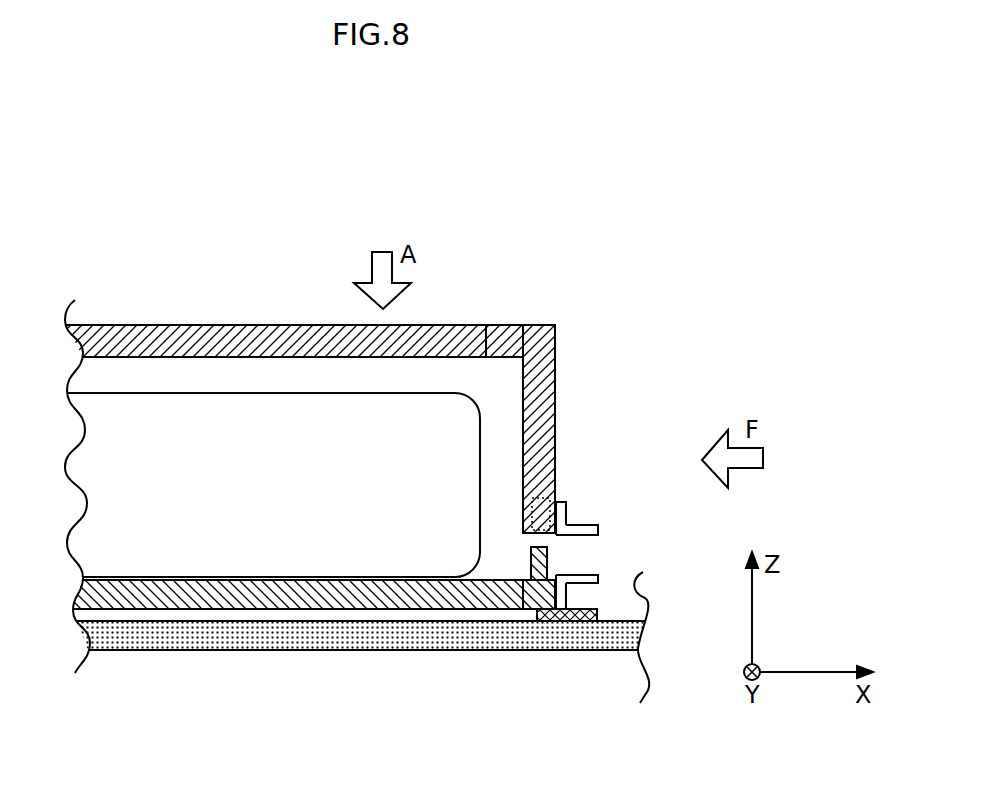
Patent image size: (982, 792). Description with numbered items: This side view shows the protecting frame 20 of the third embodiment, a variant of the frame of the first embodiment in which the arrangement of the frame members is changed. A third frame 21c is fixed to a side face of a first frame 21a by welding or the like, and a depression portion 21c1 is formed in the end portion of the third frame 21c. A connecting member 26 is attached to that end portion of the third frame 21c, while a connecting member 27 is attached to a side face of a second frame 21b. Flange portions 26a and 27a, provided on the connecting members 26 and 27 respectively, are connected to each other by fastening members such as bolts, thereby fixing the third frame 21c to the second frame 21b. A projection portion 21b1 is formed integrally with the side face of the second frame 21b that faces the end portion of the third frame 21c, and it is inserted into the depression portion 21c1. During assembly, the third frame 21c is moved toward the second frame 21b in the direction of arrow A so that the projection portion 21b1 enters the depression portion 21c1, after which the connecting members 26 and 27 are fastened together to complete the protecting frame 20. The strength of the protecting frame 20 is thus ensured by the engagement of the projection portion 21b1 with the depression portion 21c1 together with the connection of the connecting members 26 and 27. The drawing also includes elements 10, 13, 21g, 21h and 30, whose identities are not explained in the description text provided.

The substrate 10 is at (414, 640).
The adhesive layer 13 is at (583, 622).
The protecting frame 20 is at (540, 312).
The first frame 21a is at (498, 340).
The second frame 21b is at (526, 598).
The projection portion 21b1 is at (530, 573).
The third frame 21c is at (546, 370).
The depression portion 21c1 is at (536, 496).
The top plate 21g is at (263, 342).
The bottom plate 21h is at (230, 598).
The connecting member 26 is at (567, 510).
The flange portion 26a is at (596, 530).
The connecting member 27 is at (566, 597).
The flange portion 27a is at (584, 580).
The internal component 30 is at (160, 440).